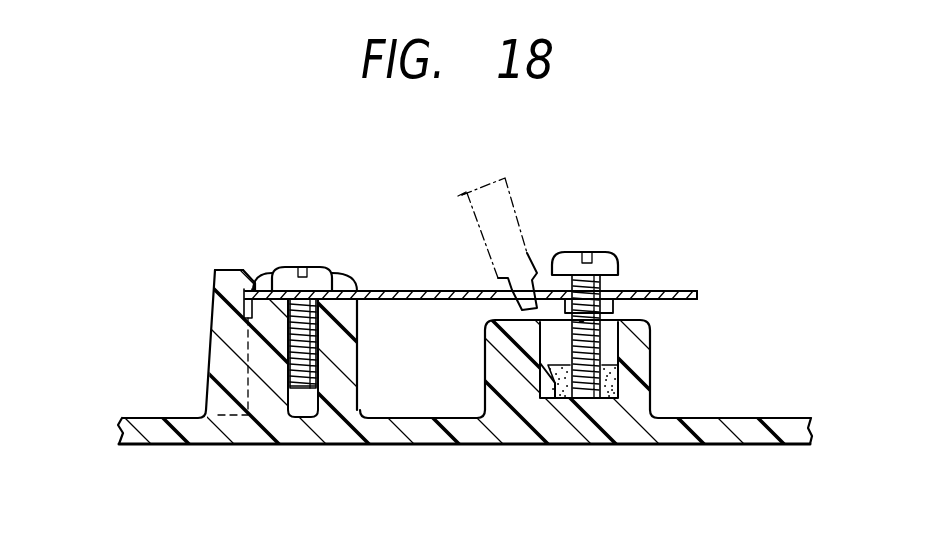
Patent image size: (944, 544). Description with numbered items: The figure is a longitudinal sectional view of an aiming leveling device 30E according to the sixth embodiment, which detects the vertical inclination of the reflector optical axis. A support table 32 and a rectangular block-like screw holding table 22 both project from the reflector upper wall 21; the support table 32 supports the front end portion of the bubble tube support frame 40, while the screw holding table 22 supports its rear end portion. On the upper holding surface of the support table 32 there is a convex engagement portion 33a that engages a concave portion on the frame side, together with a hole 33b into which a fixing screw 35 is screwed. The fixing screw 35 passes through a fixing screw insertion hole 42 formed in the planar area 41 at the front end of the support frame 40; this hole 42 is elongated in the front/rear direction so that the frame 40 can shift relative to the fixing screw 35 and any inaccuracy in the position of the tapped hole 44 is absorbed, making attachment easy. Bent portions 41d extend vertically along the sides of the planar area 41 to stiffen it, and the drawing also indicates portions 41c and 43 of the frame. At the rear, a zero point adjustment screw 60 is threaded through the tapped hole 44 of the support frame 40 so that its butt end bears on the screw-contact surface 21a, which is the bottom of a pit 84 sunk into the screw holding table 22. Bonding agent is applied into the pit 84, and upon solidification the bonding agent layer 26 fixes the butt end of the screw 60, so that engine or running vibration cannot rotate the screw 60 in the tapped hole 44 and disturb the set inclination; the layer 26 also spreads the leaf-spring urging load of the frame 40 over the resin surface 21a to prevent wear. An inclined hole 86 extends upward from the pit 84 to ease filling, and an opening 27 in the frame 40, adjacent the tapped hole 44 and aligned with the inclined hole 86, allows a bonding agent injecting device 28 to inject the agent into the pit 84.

The reflector upper wall 21 is at (428, 430).
The screw-contact surface 21a is at (615, 360).
The screw holding table 22 is at (652, 368).
The bonding agent layer 26 is at (550, 355).
The opening 27 is at (538, 286).
The bonding agent injecting device 28 is at (514, 206).
The aiming leveling device 30E is at (449, 213).
The support table 32 is at (207, 395).
The convex engagement portion 33a is at (228, 268).
The hole 33b is at (290, 345).
The fixing screw 35 is at (313, 268).
The bubble tube support frame 40 is at (672, 285).
The planar area 41 is at (253, 286).
The hidden plate portion 41c is at (209, 268).
The bent portions 41d is at (269, 275).
The fixing screw insertion hole 42 is at (346, 274).
The plate extension 43 is at (645, 290).
The tapped hole 44 is at (614, 311).
The zero point adjustment screw 60 is at (596, 252).
The pit 84 is at (620, 352).
The inclined hole 86 is at (505, 316).